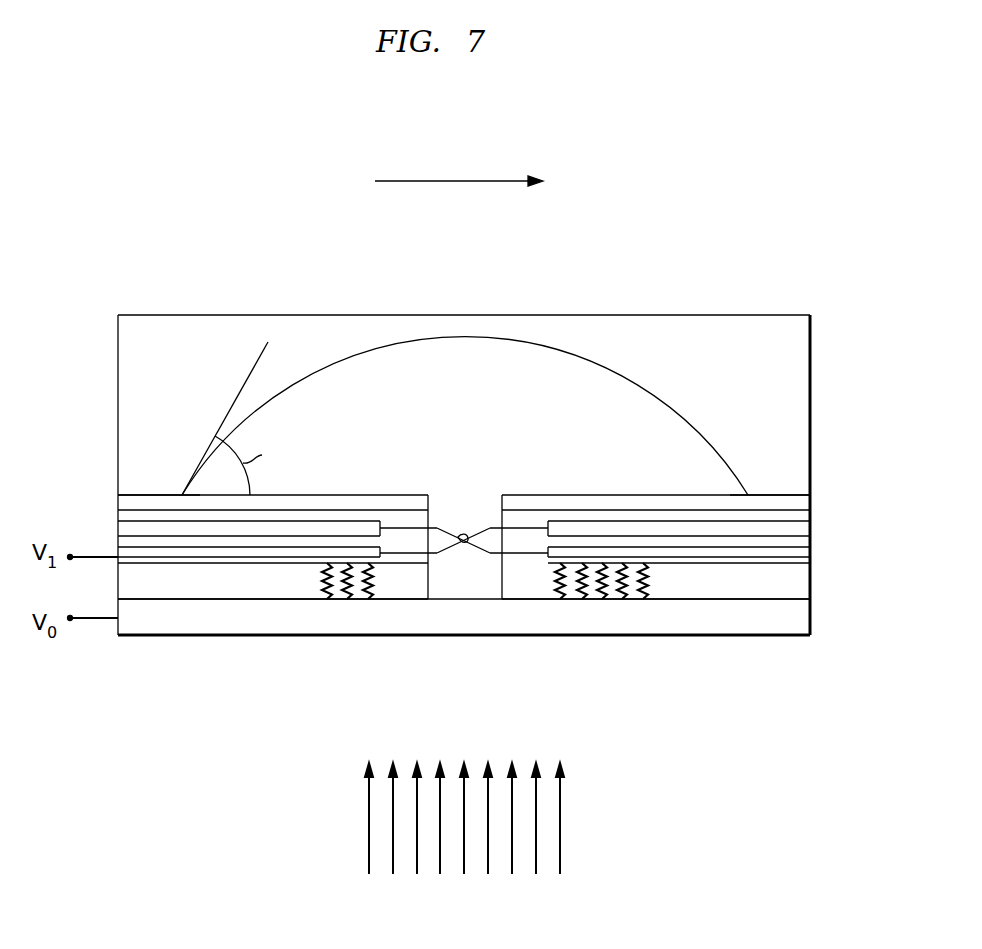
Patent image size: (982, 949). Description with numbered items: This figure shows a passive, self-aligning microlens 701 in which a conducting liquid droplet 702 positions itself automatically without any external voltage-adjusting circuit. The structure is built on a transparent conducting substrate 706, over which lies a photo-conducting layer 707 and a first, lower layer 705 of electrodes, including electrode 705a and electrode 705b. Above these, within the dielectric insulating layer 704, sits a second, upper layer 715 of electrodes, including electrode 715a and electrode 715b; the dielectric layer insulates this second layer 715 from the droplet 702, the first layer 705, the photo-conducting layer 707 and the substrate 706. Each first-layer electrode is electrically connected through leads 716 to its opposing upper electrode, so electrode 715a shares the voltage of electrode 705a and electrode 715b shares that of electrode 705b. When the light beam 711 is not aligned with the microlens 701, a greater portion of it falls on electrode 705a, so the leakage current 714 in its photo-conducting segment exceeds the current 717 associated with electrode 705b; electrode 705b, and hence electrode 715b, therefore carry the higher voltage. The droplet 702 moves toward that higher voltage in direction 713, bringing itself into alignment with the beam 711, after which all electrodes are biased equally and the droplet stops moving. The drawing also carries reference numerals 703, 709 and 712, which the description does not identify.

The microlens 701 is at (602, 260).
The droplet 702 is at (677, 412).
The upper layer 703 is at (118, 497).
The dielectric insulating layer 704 is at (118, 510).
The first layer of electrodes 705 is at (148, 563).
The electrode 705a is at (700, 565).
The electrode 705b is at (213, 567).
The transparent conducting substrate 706 is at (290, 637).
The photo-conducting layer 707 is at (118, 578).
The enclosure 709 is at (197, 314).
The light beam 711 is at (368, 826).
The gap 712 is at (466, 494).
The direction 713 is at (450, 180).
The leakage current 714 is at (575, 596).
The second layer of electrodes 715 is at (160, 515).
The electrode 715a is at (350, 515).
The electrode 715b is at (570, 515).
The leads 716 is at (480, 548).
The current 717 is at (357, 596).